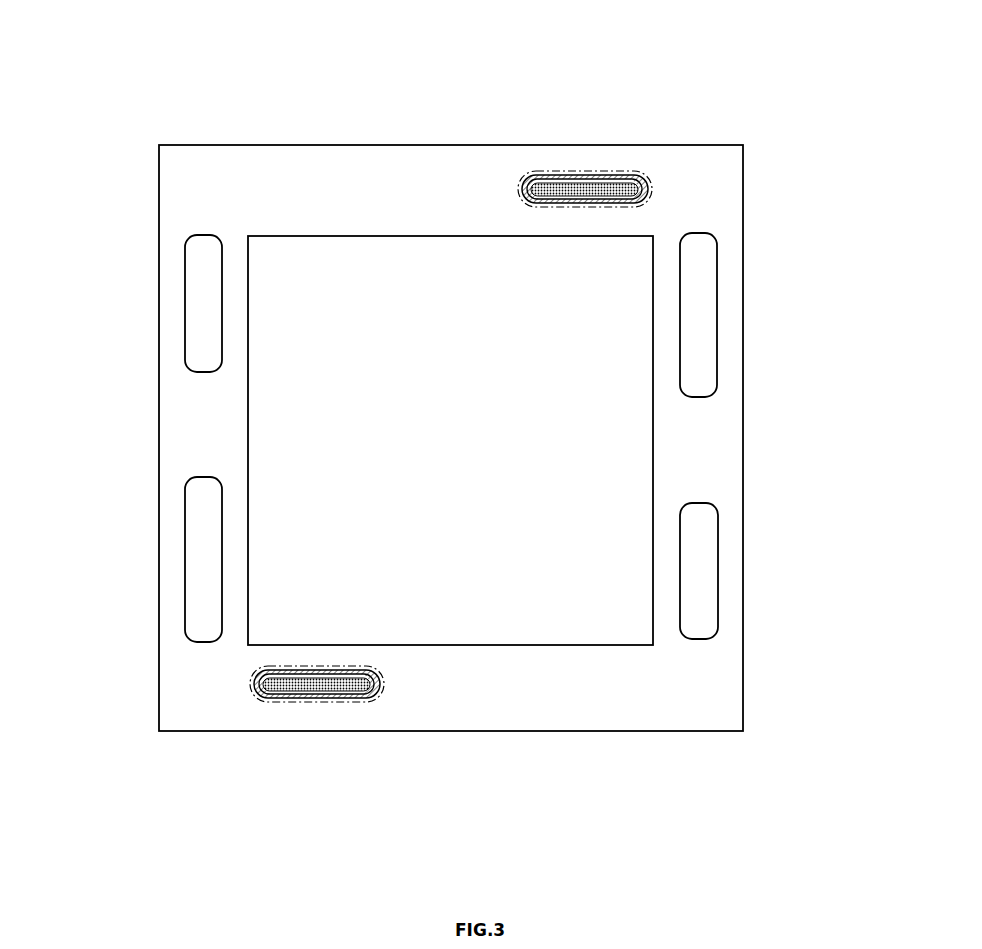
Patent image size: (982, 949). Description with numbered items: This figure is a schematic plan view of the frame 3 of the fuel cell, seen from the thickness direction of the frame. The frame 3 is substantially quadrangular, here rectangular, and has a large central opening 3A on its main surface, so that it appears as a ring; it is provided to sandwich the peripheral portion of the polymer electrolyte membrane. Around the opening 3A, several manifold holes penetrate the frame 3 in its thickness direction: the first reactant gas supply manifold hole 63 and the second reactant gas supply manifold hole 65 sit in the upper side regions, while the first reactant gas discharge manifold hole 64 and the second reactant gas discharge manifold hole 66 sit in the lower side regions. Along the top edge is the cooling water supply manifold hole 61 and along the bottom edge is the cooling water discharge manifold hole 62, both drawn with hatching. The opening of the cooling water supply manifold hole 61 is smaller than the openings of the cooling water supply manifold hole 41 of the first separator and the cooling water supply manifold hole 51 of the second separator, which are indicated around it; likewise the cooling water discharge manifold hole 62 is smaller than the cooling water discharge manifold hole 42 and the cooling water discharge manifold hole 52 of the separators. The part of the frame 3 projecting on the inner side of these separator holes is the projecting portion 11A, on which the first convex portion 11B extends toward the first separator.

The frame 3 is at (446, 30).
The opening 3A is at (653, 449).
The cooling water supply manifold hole 41 is at (687, 133).
The cooling water supply manifold hole 51 is at (585, 133).
The cooling water discharge manifold hole 42 is at (212, 741).
The cooling water discharge manifold hole 52 is at (317, 741).
The cooling water supply manifold hole 61 is at (565, 178).
The cooling water discharge manifold hole 62 is at (307, 695).
The projecting portion 11A is at (531, 171).
The first convex portion 11B is at (618, 171).
The first reactant gas supply manifold hole 63 is at (716, 316).
The first reactant gas discharge manifold hole 64 is at (186, 549).
The second reactant gas supply manifold hole 65 is at (186, 299).
The second reactant gas discharge manifold hole 66 is at (716, 576).